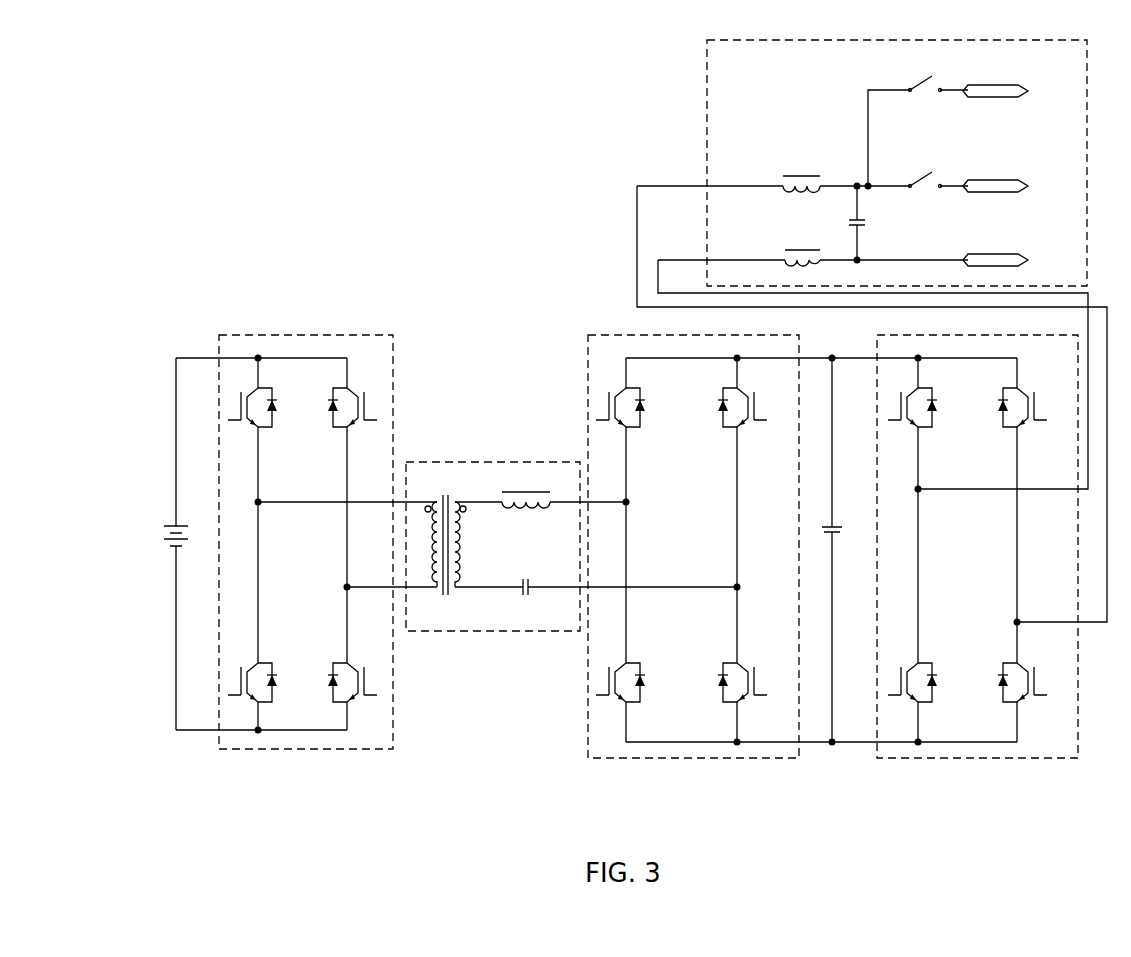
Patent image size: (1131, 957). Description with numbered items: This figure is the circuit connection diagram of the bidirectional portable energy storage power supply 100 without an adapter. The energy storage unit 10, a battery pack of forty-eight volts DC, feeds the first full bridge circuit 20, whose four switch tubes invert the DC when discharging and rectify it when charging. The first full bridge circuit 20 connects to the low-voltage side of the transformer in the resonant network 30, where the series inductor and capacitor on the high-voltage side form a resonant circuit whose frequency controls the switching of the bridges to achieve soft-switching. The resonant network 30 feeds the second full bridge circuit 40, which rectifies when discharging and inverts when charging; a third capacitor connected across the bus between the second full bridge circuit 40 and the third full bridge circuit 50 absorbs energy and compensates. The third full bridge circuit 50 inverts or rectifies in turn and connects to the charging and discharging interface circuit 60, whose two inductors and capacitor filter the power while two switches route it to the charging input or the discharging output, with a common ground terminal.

The bidirectional portable energy storage power supply 100 is at (468, 172).
The energy storage unit 10 is at (162, 540).
The first full bridge circuit 20 is at (320, 334).
The resonant network 30 is at (455, 462).
The second full bridge circuit 40 is at (695, 760).
The third full bridge circuit 50 is at (960, 760).
The charging and discharging interface circuit 60 is at (707, 137).